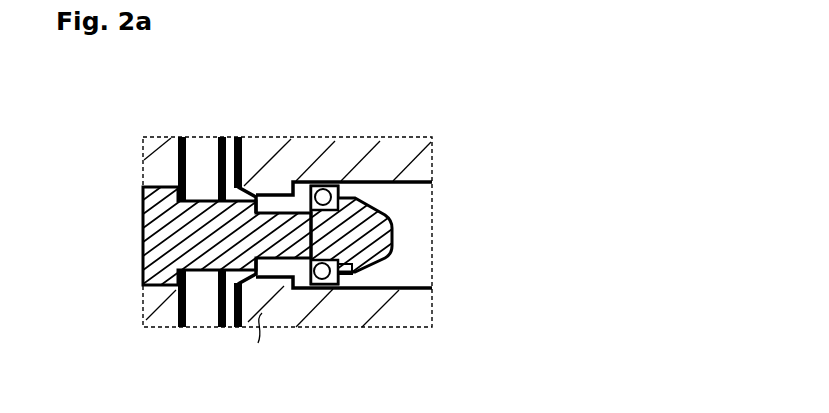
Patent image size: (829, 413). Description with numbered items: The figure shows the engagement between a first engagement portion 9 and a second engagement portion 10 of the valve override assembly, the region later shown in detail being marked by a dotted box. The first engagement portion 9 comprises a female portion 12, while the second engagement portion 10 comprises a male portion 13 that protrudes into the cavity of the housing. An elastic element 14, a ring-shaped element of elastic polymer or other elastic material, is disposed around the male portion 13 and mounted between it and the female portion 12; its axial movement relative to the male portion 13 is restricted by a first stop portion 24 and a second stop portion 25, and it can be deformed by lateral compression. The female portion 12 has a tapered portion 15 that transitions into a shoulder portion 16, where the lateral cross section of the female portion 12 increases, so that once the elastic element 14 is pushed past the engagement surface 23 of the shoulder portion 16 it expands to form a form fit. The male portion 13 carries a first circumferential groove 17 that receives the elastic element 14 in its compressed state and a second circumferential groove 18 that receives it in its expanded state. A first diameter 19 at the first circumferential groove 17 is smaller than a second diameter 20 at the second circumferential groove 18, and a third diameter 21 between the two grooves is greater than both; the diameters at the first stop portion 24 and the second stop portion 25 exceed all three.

The first engagement portion 9 is at (256, 350).
The second engagement portion 10 is at (393, 224).
The female portion 12 is at (274, 280).
The male portion 13 is at (375, 210).
The elastic element 14 is at (313, 186).
The tapered portion 15 is at (250, 298).
The shoulder portion 16 is at (291, 195).
The first circumferential groove 17 is at (205, 216).
The second circumferential groove 18 is at (347, 264).
The first diameter 19 is at (262, 238).
The second diameter 20 is at (386, 252).
The third diameter 21 is at (278, 195).
The engagement surface 23 is at (321, 282).
The first stop portion 24 is at (213, 197).
The second stop portion 25 is at (350, 197).